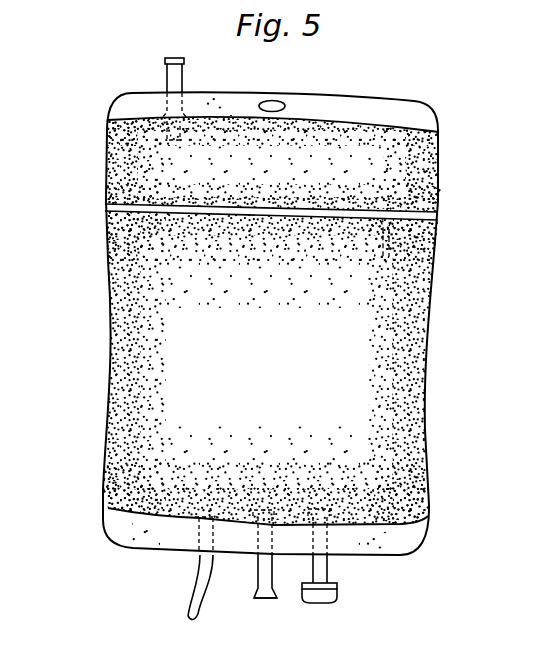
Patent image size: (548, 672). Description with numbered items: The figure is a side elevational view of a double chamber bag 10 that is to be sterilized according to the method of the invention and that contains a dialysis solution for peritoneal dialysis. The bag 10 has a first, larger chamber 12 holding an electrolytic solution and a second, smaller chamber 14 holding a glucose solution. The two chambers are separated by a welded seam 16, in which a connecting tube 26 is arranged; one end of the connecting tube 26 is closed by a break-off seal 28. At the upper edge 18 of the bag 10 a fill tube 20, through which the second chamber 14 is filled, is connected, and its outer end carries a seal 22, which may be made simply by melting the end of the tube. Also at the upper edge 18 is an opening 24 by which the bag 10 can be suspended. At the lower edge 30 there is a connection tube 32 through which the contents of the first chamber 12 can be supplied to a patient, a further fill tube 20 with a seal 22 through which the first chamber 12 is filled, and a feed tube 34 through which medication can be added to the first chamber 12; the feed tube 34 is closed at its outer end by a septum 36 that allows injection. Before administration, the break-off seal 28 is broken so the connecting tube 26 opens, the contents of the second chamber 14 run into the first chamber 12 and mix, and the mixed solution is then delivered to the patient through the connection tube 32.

The double chamber bag 10 is at (97, 89).
The first chamber 12 is at (127, 356).
The second chamber 14 is at (127, 163).
The welded seam 16 is at (103, 204).
The upper edge 18 is at (132, 106).
The fill tube 20 is at (183, 78).
The seal 22 is at (168, 66).
The opening 24 is at (278, 100).
The connecting tube 26 is at (454, 182).
The break-off seal 28 is at (396, 246).
The lower edge 30 is at (122, 525).
The connection tube 32 is at (185, 611).
The feed tube 34 is at (329, 573).
The septum 36 is at (322, 597).